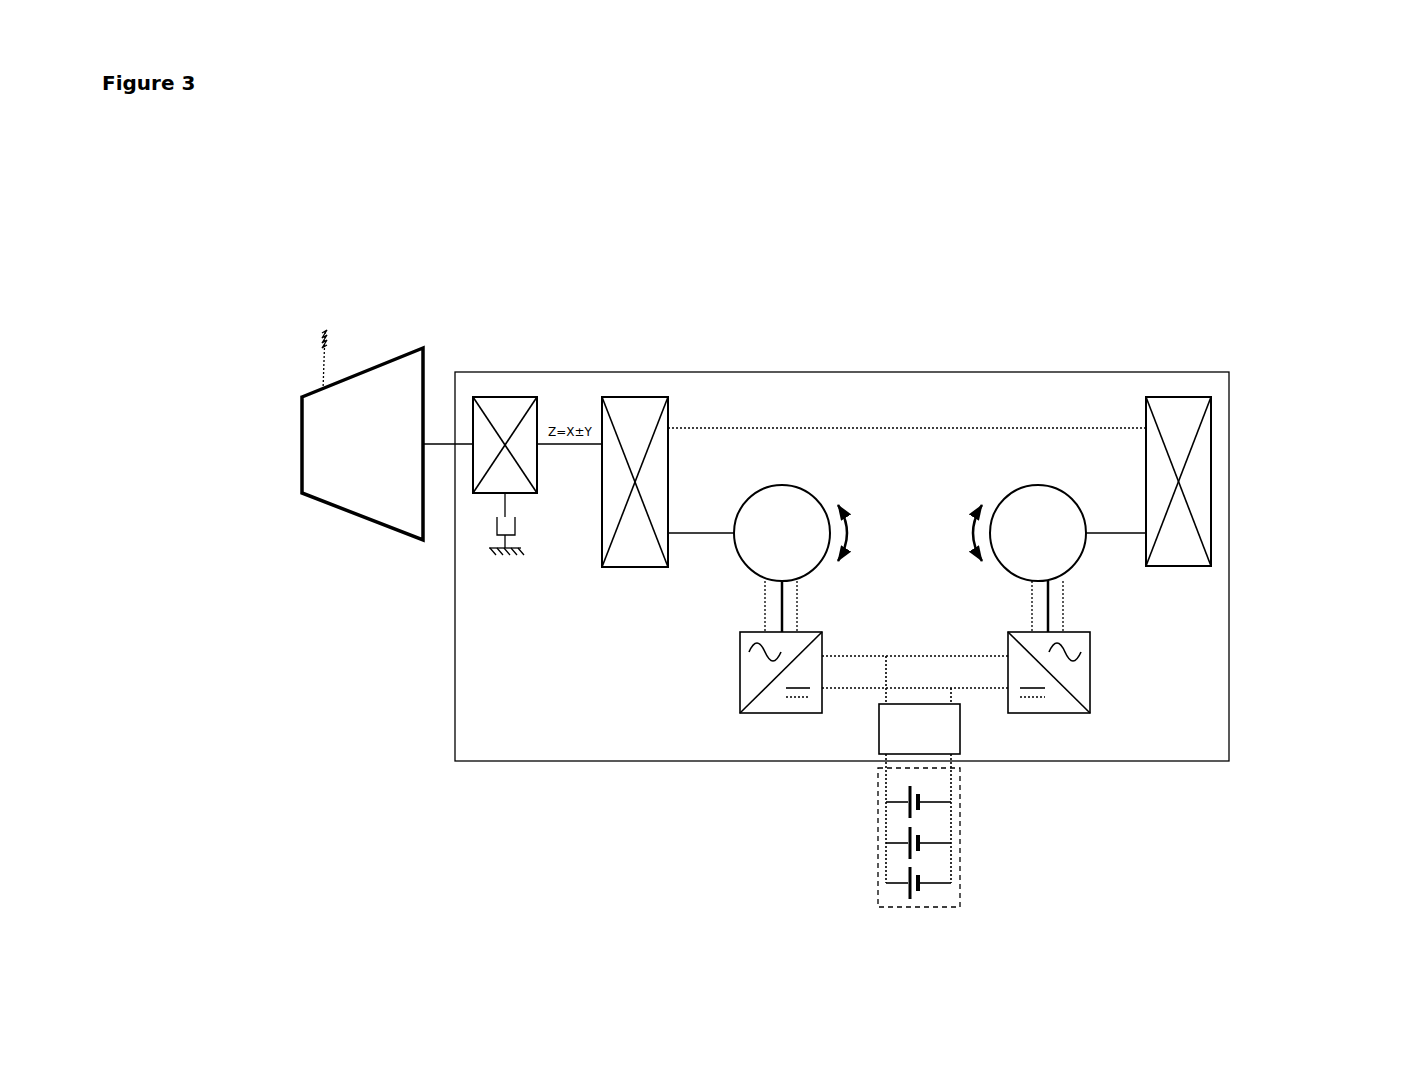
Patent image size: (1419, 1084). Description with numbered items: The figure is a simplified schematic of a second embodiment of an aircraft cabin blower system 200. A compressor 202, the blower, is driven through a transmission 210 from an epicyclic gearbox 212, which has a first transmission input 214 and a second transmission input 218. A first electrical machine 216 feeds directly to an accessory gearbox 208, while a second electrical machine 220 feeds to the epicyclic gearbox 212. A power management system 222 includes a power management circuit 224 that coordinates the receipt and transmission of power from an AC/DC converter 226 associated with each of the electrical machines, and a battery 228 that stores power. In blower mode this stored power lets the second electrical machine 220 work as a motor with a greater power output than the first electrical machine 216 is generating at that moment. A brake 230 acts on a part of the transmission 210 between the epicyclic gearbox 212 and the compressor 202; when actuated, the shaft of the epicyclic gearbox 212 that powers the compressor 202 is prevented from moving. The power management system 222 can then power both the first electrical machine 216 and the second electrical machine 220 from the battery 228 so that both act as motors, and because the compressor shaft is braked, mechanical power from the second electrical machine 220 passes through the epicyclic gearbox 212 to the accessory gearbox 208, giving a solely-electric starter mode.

The cabin blower system 200 is at (480, 168).
The compressor 202 is at (315, 387).
The accessory gearbox 208 is at (1206, 430).
The transmission 210 is at (578, 353).
The epicyclic gearbox 212 is at (640, 396).
The first transmission input 214 is at (716, 428).
The first electrical machine 216 is at (1047, 485).
The second transmission input 218 is at (676, 536).
The second electrical machine 220 is at (782, 485).
The power management system 222 is at (1000, 790).
The power management circuit 224 is at (873, 737).
The AC/DC converter 226 is at (740, 672).
The battery 228 is at (873, 858).
The brake 230 is at (495, 527).